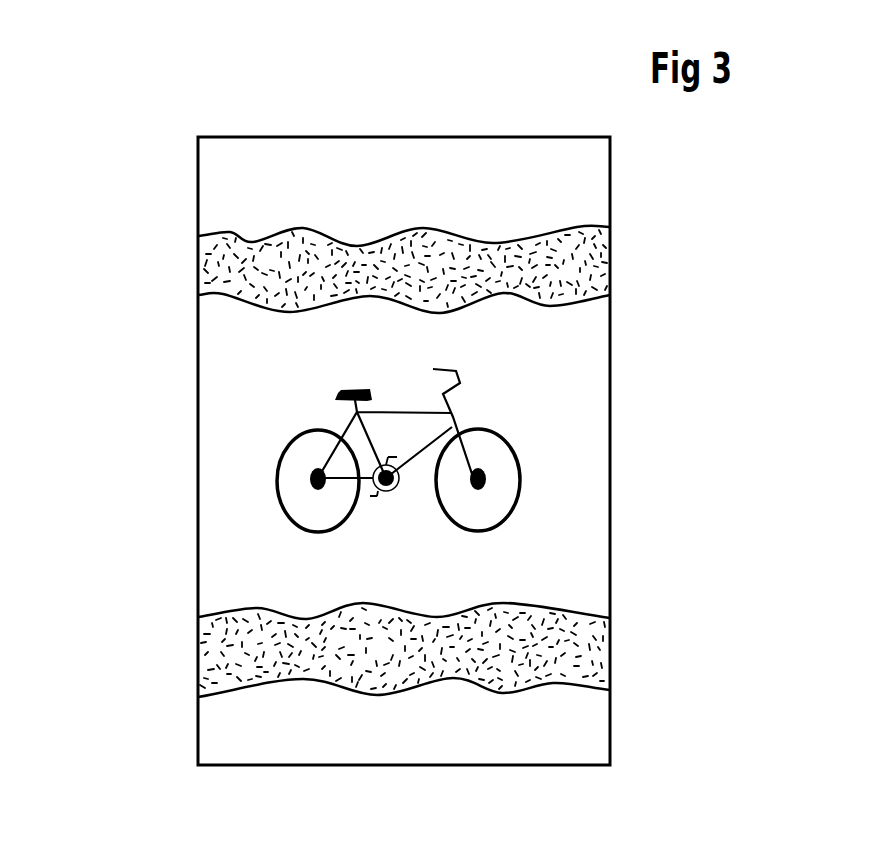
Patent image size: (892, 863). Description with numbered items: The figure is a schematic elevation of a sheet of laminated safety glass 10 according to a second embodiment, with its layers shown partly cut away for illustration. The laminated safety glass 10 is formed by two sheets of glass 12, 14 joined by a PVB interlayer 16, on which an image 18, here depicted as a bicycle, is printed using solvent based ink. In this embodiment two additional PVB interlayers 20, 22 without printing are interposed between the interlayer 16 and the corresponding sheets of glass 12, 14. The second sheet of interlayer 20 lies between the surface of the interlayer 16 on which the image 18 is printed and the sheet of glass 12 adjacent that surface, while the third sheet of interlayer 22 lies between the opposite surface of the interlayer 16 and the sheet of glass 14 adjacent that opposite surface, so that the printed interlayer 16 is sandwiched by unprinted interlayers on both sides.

The laminated safety glass 10 is at (137, 744).
The sheet of glass 12 is at (583, 185).
The sheet of glass 14 is at (590, 728).
The PVB interlayer 16 is at (588, 459).
The image 18 is at (277, 500).
The second sheet of interlayer 20 is at (587, 260).
The third sheet of interlayer 22 is at (590, 657).